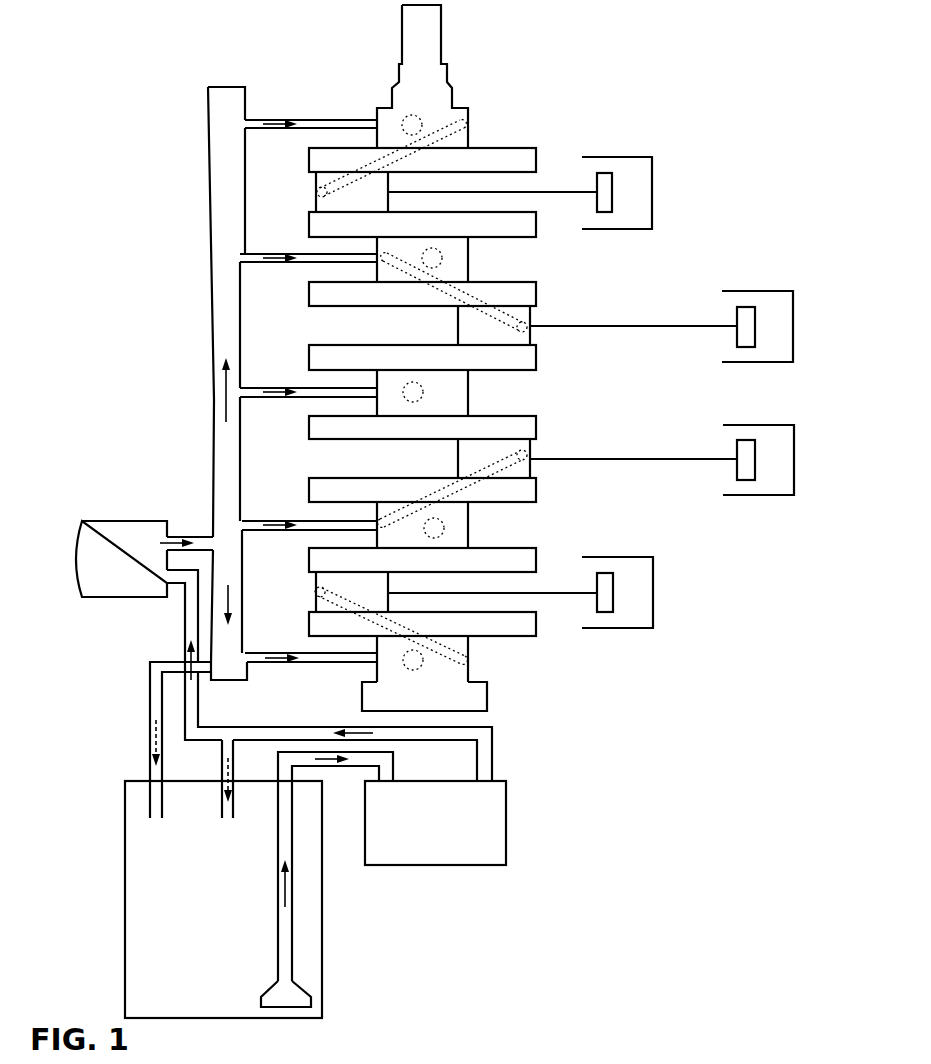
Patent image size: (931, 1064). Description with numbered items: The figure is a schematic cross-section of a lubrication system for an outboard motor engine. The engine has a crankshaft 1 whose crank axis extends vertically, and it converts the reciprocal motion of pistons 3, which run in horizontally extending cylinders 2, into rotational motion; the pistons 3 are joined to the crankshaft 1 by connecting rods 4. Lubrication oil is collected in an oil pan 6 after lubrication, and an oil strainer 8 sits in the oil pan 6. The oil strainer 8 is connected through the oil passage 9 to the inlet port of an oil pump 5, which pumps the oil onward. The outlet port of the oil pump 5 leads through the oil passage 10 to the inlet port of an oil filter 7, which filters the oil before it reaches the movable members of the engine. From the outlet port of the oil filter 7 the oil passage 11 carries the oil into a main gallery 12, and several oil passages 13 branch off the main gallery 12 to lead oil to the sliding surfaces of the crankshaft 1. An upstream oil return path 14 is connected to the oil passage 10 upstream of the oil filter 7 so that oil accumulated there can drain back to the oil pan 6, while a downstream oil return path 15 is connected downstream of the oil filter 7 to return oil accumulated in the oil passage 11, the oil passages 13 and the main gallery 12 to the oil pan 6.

The crankshaft 1 is at (487, 690).
The cylinders 2 is at (652, 190).
The pistons 3 is at (597, 205).
The connecting rods 4 is at (560, 192).
The oil pump 5 is at (506, 820).
The oil pan 6 is at (125, 893).
The oil filter 7 is at (124, 521).
The oil strainer 8 is at (300, 988).
The oil passage 9 is at (340, 768).
The oil passage 10 is at (274, 727).
The oil passage 11 is at (193, 537).
The main gallery 12 is at (208, 190).
The oil passages 13 is at (316, 120).
The upstream oil return path 14 is at (222, 762).
The downstream oil return path 15 is at (150, 707).